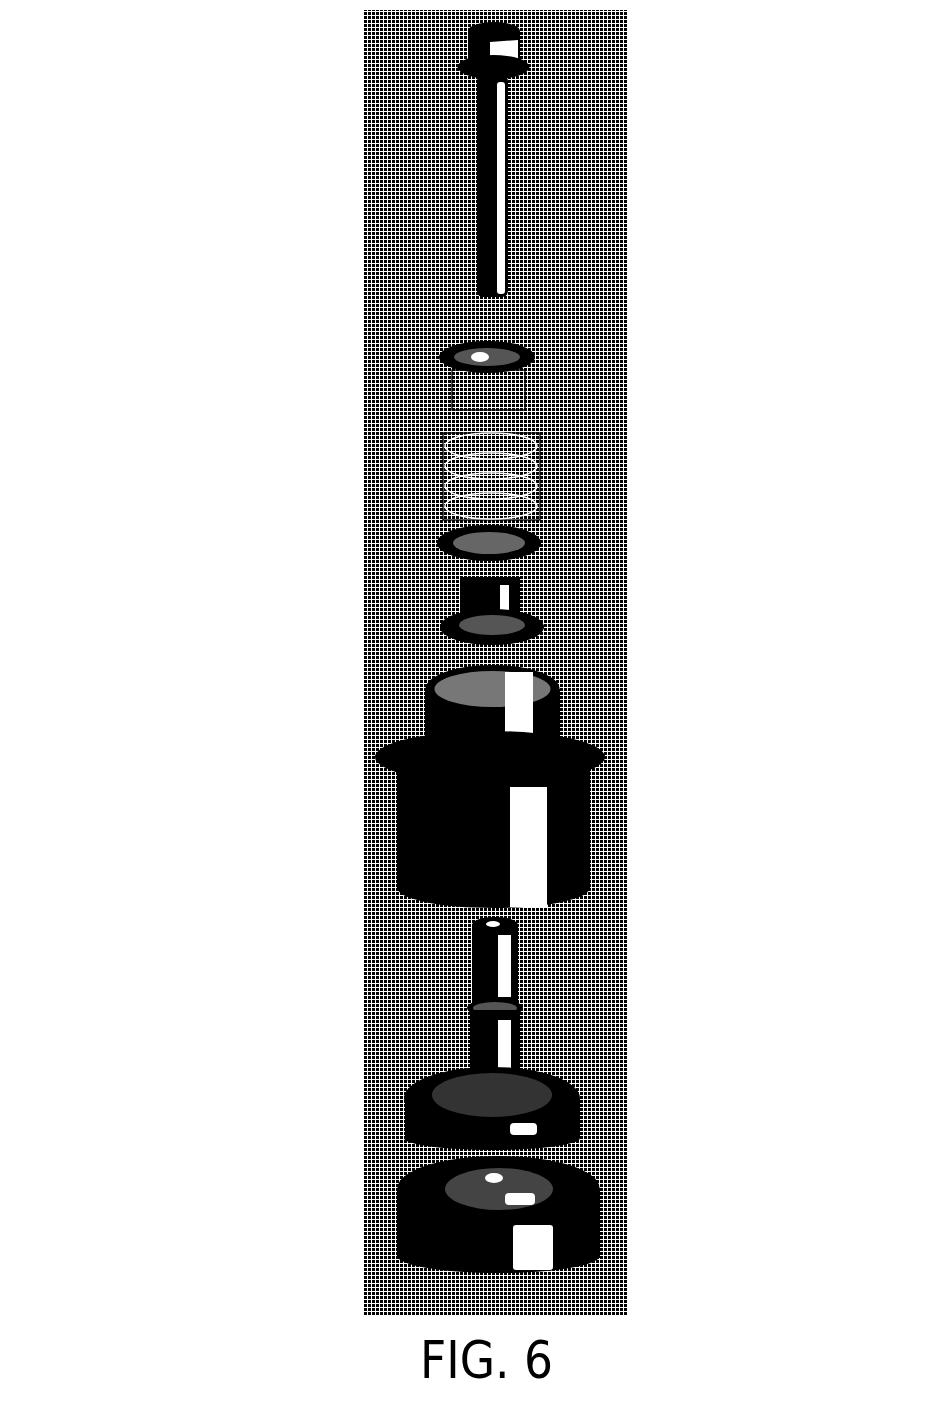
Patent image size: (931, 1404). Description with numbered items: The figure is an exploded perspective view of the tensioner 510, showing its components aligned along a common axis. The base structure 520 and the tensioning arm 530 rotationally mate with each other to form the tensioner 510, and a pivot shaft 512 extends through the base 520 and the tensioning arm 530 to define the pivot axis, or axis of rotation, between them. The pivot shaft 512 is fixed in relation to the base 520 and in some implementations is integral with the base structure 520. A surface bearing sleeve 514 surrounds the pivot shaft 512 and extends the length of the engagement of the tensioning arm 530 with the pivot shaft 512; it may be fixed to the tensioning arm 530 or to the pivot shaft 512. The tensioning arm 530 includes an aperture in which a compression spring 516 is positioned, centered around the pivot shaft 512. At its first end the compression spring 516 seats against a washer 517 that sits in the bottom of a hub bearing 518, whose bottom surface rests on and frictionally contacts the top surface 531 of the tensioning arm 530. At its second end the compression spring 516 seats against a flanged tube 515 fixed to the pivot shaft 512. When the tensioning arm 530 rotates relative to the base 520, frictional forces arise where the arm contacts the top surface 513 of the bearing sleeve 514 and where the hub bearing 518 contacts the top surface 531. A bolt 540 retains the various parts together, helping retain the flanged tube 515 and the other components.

The tensioner 510 is at (145, 206).
The pivot shaft 512 is at (383, 1014).
The top surface of the bearing sleeve 513 is at (548, 1073).
The surface bearing sleeve 514 is at (458, 1043).
The flanged tube 515 is at (538, 357).
The compression spring 516 is at (442, 457).
The washer 517 is at (543, 540).
The hub bearing 518 is at (545, 623).
The base structure 520 is at (397, 1208).
The tensioning arm 530 is at (514, 786).
The top surface of the tensioning arm 531 is at (395, 742).
The bolt 540 is at (510, 205).